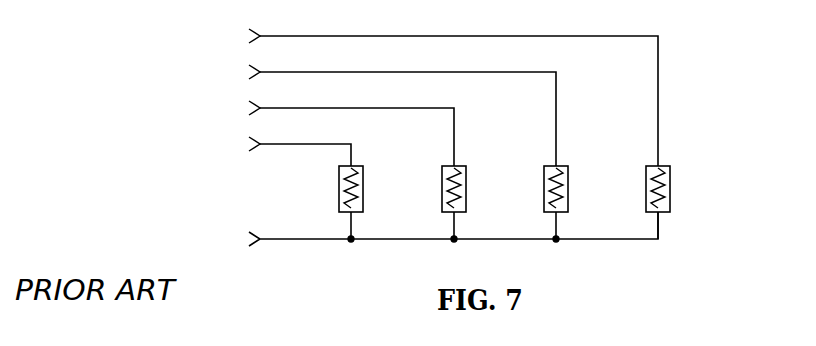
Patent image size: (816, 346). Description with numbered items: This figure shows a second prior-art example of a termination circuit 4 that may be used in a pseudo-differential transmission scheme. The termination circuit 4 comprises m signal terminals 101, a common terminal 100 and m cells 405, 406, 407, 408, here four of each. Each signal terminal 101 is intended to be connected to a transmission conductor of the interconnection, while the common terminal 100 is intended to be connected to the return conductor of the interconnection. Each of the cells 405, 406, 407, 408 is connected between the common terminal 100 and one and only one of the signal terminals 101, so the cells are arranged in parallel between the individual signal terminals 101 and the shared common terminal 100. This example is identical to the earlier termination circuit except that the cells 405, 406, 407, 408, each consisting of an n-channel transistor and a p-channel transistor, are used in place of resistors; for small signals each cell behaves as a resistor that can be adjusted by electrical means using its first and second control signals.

The termination circuit 4 is at (725, 103).
The common terminal 100 is at (230, 243).
The signal terminals 101 is at (230, 148).
The cell 405 is at (334, 190).
The cell 406 is at (437, 190).
The cell 407 is at (540, 190).
The cell 408 is at (643, 190).